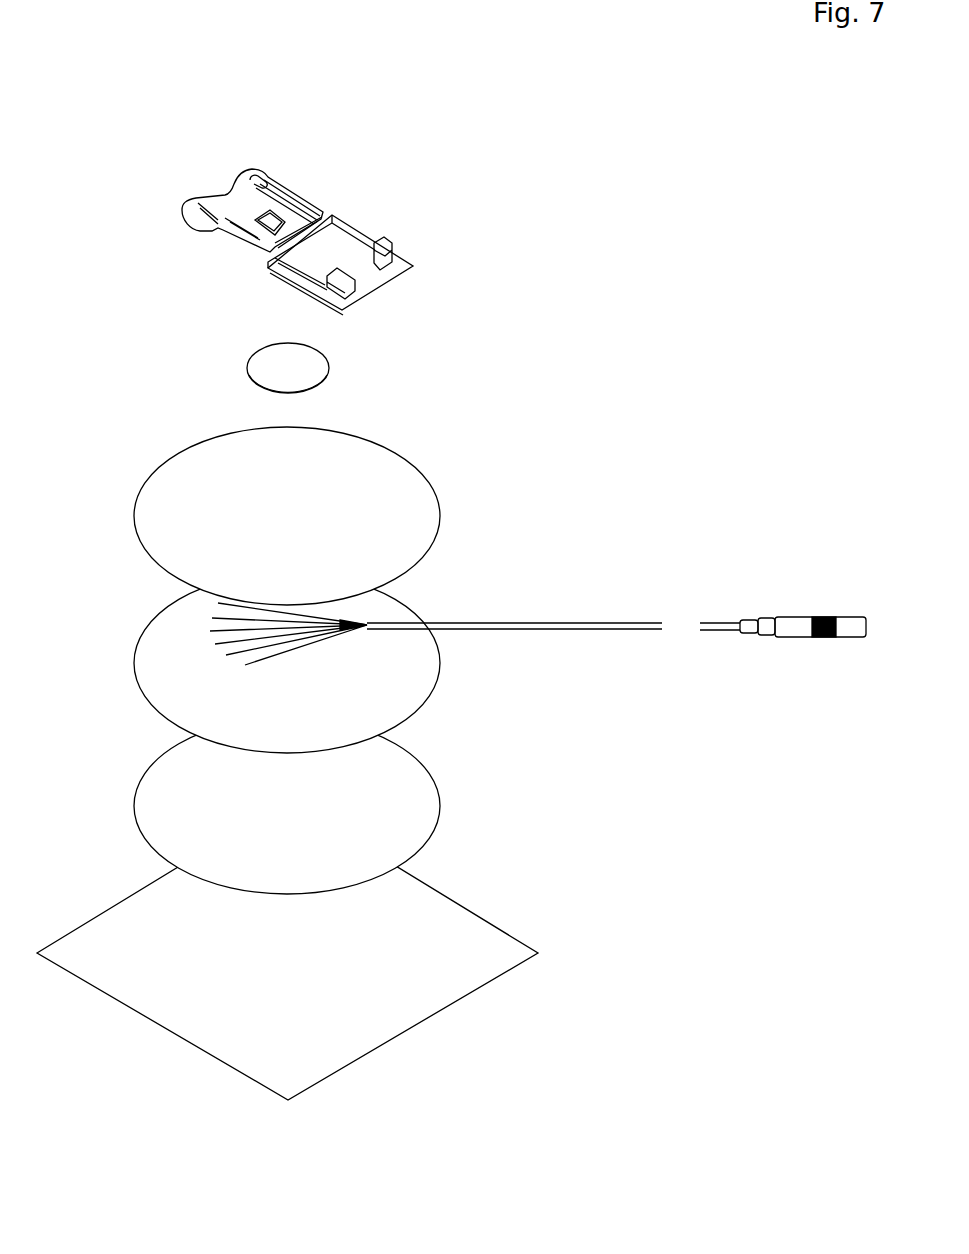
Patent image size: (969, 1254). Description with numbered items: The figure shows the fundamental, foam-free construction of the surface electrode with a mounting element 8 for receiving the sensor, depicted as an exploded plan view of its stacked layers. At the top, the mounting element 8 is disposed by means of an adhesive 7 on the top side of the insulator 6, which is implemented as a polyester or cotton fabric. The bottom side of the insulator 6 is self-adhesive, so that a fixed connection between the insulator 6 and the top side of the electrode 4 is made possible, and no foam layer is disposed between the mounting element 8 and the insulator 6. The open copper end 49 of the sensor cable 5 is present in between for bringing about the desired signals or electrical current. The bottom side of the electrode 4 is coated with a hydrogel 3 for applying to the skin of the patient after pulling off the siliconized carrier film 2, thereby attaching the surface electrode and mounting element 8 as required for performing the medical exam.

The carrier film 2 is at (352, 1010).
The hydrogel 3 is at (323, 817).
The electrode 4 is at (353, 697).
The sensor cable 5 is at (523, 629).
The insulator 6 is at (365, 492).
The adhesive arrangement 7 is at (298, 365).
The mounting element 8 is at (398, 252).
The open end of the cable 49 is at (322, 642).